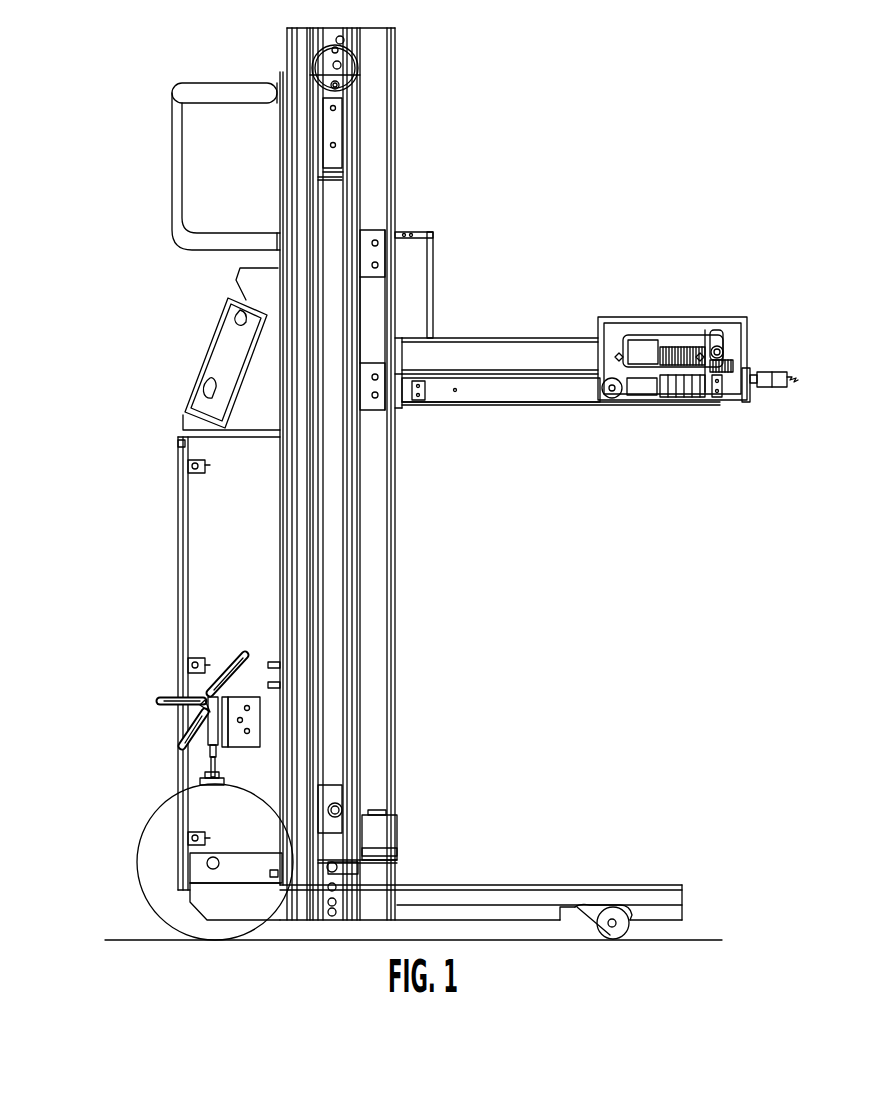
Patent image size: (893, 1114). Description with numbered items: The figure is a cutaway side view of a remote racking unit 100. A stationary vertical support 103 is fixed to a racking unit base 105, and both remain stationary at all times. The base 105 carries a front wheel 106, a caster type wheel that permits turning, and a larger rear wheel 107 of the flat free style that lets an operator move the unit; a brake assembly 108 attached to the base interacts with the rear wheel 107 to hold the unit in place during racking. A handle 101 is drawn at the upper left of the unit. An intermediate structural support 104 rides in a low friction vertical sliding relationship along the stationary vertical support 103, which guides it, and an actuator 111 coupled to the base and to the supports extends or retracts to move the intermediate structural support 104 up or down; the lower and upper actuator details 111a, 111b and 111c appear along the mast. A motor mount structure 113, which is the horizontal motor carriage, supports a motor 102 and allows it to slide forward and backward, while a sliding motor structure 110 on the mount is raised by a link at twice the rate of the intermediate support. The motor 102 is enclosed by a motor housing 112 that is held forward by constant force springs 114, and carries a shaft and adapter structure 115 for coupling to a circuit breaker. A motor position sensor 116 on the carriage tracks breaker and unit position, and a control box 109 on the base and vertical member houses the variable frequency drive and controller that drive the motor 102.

The remote racking unit 100 is at (104, 146).
The handle 101 is at (170, 88).
The motor 102 is at (717, 353).
The stationary vertical support 103 is at (333, 492).
The intermediate structural support 104 is at (372, 558).
The racking unit base 105 is at (473, 900).
The front wheel 106 is at (630, 907).
The rear wheel 107 is at (263, 795).
The brake assembly 108 is at (253, 718).
The control box 109 is at (207, 558).
The sliding motor structure 110 is at (427, 232).
The actuator 111 is at (398, 842).
The lower block 111a is at (400, 850).
The upper bracket plate 111b is at (337, 193).
The top pulley 111c is at (333, 168).
The motor housing 112 is at (663, 317).
The motor mount structure 113 is at (482, 352).
The constant force springs 114 is at (615, 398).
The shaft and adapter structure 115 is at (768, 390).
The motor position sensor 116 is at (482, 396).